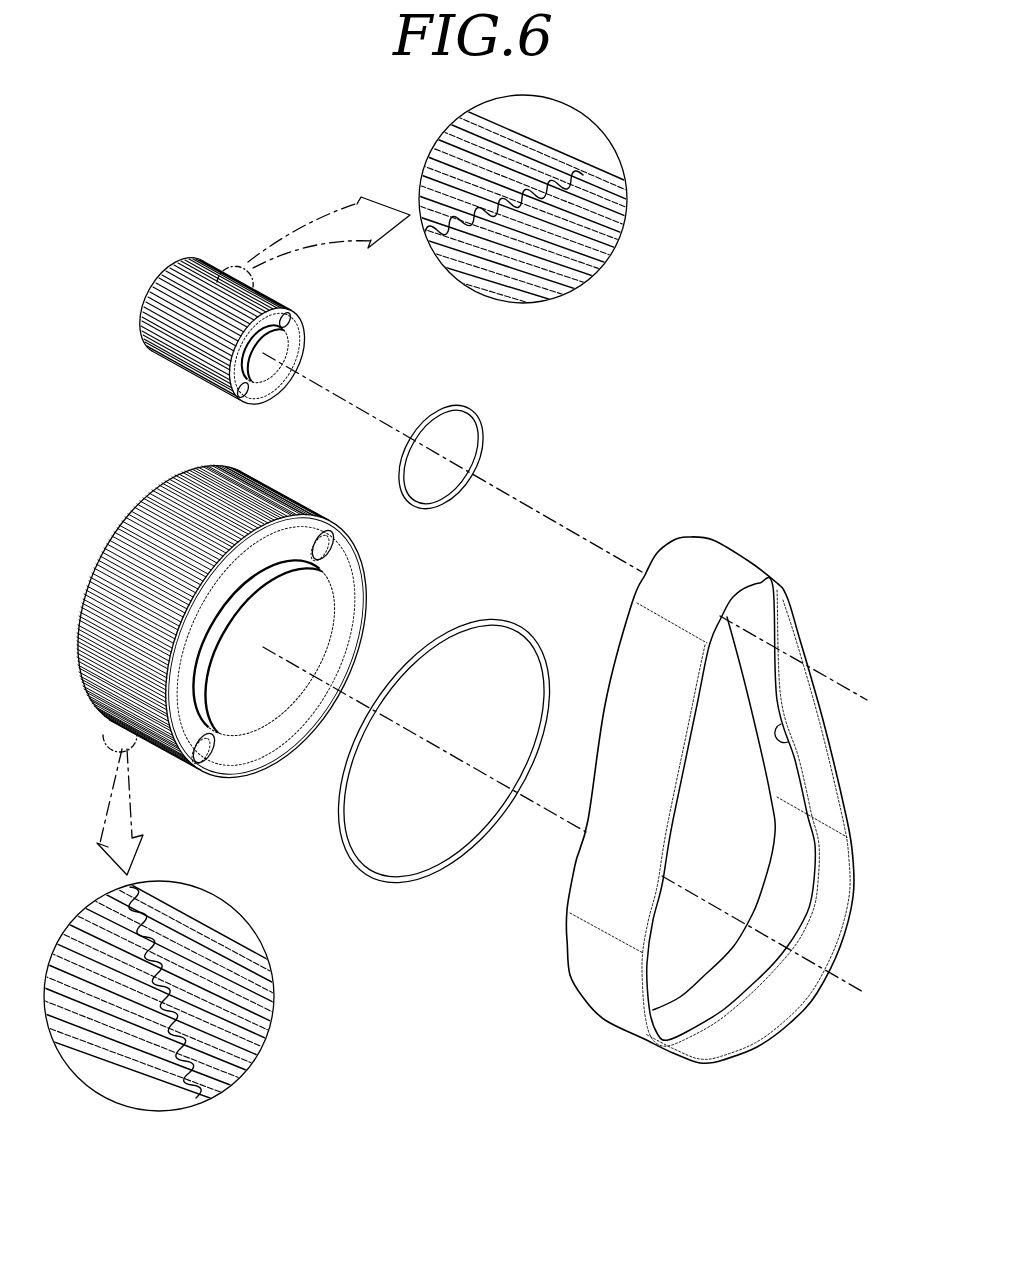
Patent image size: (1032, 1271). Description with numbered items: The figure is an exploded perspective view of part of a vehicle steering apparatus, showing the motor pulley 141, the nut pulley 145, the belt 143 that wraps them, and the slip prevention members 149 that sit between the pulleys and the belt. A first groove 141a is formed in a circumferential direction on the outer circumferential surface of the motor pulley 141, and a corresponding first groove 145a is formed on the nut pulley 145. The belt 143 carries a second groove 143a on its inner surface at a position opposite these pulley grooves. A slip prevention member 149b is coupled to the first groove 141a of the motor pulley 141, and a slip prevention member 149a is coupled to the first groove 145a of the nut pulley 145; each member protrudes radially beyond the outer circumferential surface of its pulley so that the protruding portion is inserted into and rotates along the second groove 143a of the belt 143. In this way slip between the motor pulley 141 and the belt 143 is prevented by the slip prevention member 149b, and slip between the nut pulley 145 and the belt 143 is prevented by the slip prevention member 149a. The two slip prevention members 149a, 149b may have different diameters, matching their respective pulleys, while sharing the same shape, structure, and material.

The motor pulley 141 is at (182, 259).
The first groove 141a is at (172, 366).
The belt 143 is at (783, 630).
The second groove 143a is at (782, 740).
The nut pulley 145 is at (254, 478).
The first groove 145a is at (262, 484).
The slip prevention members 149 is at (477, 654).
The slip prevention member 149a is at (495, 613).
The slip prevention member 149b is at (481, 413).